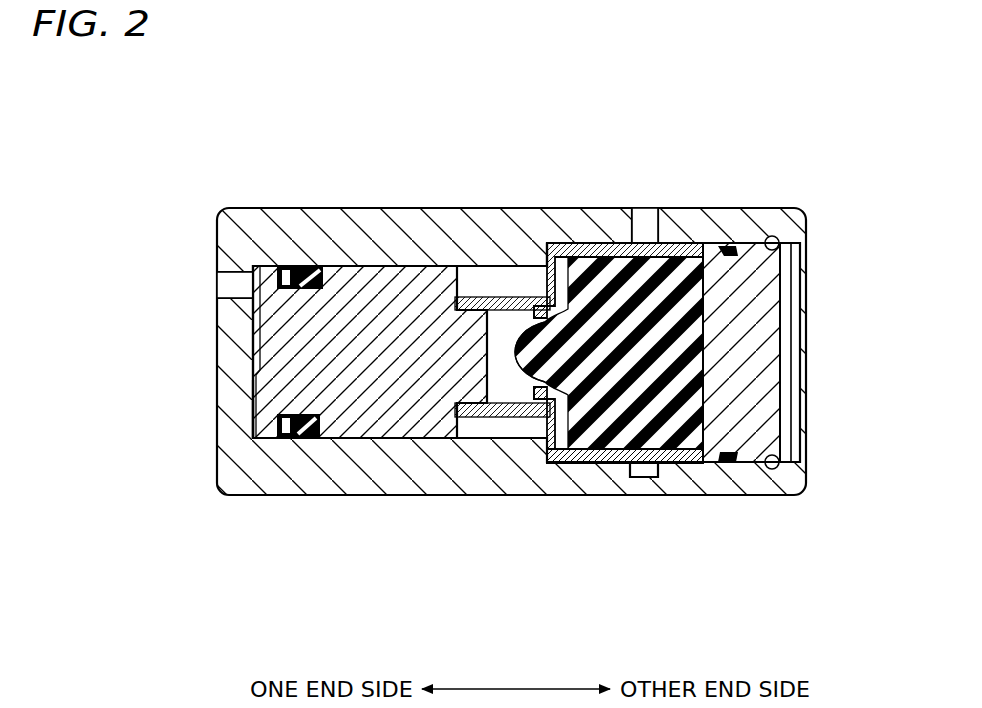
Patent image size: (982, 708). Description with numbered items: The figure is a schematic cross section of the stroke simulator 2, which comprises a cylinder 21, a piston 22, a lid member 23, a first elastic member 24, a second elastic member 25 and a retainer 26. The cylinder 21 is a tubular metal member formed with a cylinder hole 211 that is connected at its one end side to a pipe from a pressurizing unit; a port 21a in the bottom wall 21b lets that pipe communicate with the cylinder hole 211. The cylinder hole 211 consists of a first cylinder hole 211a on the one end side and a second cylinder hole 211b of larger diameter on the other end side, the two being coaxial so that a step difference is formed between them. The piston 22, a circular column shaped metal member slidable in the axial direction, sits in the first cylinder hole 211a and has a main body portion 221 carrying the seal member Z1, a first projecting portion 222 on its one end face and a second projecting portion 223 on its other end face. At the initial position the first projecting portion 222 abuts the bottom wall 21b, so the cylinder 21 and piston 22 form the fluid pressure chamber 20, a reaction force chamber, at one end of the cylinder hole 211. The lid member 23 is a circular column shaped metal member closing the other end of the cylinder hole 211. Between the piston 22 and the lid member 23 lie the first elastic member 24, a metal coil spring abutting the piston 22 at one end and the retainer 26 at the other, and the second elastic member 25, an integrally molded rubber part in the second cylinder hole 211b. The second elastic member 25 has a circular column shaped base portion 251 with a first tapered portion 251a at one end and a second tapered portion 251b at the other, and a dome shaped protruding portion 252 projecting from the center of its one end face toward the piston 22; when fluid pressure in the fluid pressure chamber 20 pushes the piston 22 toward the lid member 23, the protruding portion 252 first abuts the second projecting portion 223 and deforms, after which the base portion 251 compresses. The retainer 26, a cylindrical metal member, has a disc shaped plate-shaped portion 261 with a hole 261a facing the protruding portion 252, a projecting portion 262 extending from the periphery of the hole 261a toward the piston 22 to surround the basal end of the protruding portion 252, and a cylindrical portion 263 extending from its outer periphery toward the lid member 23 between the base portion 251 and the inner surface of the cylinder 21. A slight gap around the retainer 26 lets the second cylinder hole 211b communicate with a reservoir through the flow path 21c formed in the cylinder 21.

The stroke simulator 2 is at (160, 117).
The fluid pressure chamber 20 is at (253, 412).
The cylinder 21 is at (297, 213).
The port 21a is at (227, 283).
The bottom wall 21b is at (228, 393).
The flow path 21c is at (645, 207).
The cylinder hole 211 is at (412, 264).
The first cylinder hole 211a is at (480, 266).
The second cylinder hole 211b is at (575, 243).
The piston 22 is at (291, 438).
The main body portion 221 is at (367, 413).
The first projecting portion 222 is at (252, 350).
The second projecting portion 223 is at (412, 440).
The seal member Z1 is at (302, 440).
The lid member 23 is at (760, 410).
The first elastic member 24 is at (470, 417).
The second elastic member 25 is at (662, 358).
The base portion 251 is at (630, 455).
The first tapered portion 251a is at (587, 262).
The second tapered portion 251b is at (545, 552).
The protruding portion 252 is at (548, 464).
The retainer 26 is at (699, 337).
The plate-shaped portion 261 is at (548, 265).
The hole 261a is at (705, 327).
The projecting portion 262 is at (527, 378).
The cylindrical portion 263 is at (733, 245).